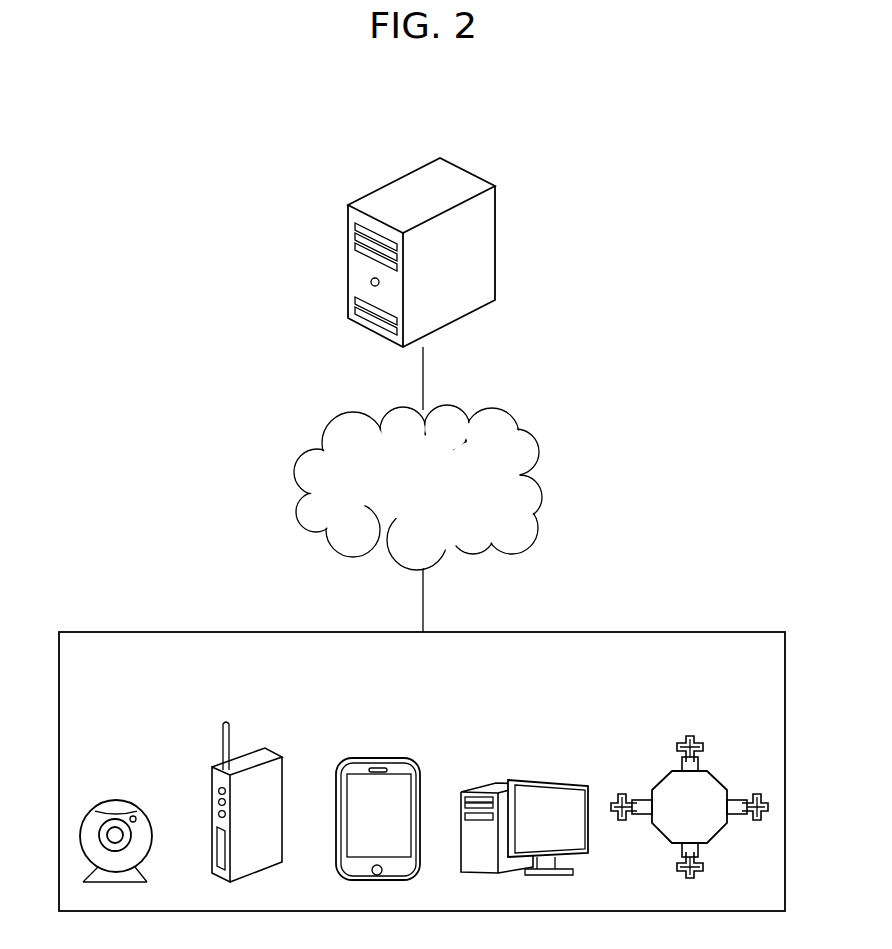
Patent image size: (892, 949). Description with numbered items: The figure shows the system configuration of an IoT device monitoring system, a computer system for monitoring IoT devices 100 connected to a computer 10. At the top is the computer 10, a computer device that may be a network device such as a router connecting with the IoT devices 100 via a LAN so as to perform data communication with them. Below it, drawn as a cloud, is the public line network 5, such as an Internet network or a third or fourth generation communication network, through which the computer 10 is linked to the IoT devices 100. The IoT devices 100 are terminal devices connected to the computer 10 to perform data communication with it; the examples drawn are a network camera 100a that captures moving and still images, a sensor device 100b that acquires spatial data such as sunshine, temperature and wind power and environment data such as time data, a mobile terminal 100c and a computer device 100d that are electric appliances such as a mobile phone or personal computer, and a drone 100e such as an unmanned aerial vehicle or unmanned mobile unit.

The computer 10 is at (458, 178).
The public line network 5 is at (502, 418).
The IoT devices 100 is at (422, 771).
The network camera 100a is at (136, 818).
The sensor device 100b is at (260, 757).
The mobile terminal 100c is at (397, 772).
The computer device 100d is at (548, 798).
The drone 100e is at (705, 790).